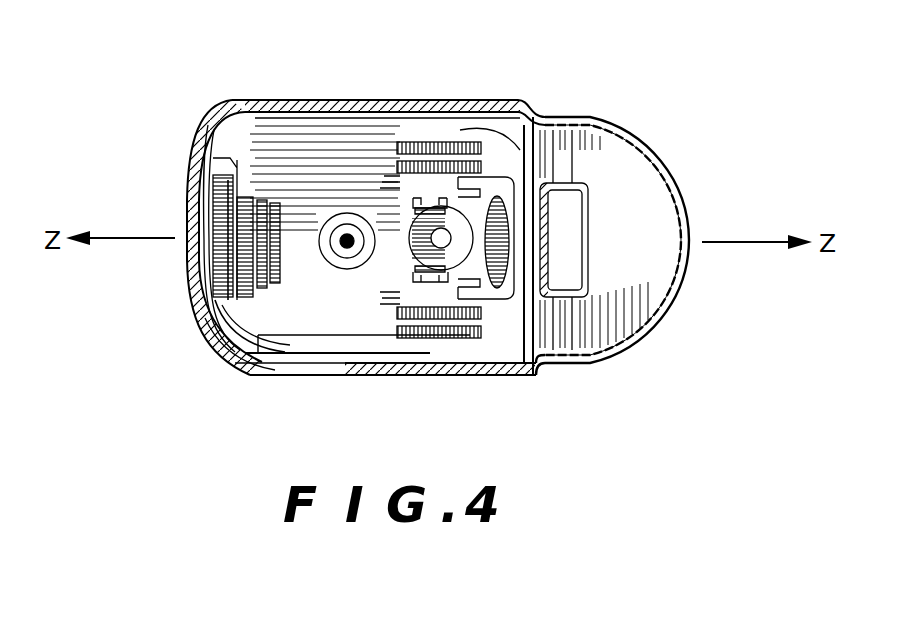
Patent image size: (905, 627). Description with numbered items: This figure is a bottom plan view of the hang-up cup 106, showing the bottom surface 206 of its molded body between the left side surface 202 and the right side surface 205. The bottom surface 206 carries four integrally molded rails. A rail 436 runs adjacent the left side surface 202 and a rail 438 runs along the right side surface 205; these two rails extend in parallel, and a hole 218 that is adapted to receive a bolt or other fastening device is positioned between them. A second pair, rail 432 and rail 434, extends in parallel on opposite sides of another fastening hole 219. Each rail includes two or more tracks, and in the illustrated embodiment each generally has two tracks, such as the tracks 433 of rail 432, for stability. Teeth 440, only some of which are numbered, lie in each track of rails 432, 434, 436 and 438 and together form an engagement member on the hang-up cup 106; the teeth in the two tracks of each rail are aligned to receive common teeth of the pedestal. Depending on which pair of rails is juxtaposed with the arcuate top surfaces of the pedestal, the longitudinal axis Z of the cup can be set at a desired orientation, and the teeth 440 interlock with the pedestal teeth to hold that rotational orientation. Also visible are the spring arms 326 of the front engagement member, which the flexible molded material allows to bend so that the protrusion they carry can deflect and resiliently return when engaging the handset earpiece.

The hang-up cup 106 is at (668, 147).
The left side surface 202 is at (320, 100).
The right side surface 205 is at (300, 378).
The bottom surface 206 is at (651, 252).
The hole 218 is at (442, 246).
The hole 219 is at (347, 233).
The spring arms 326 is at (496, 184).
The rail 432 is at (265, 312).
The tracks 433 is at (278, 200).
The rail 434 is at (423, 186).
The rail 436 is at (482, 122).
The rail 438 is at (383, 342).
The teeth 440 is at (442, 142).